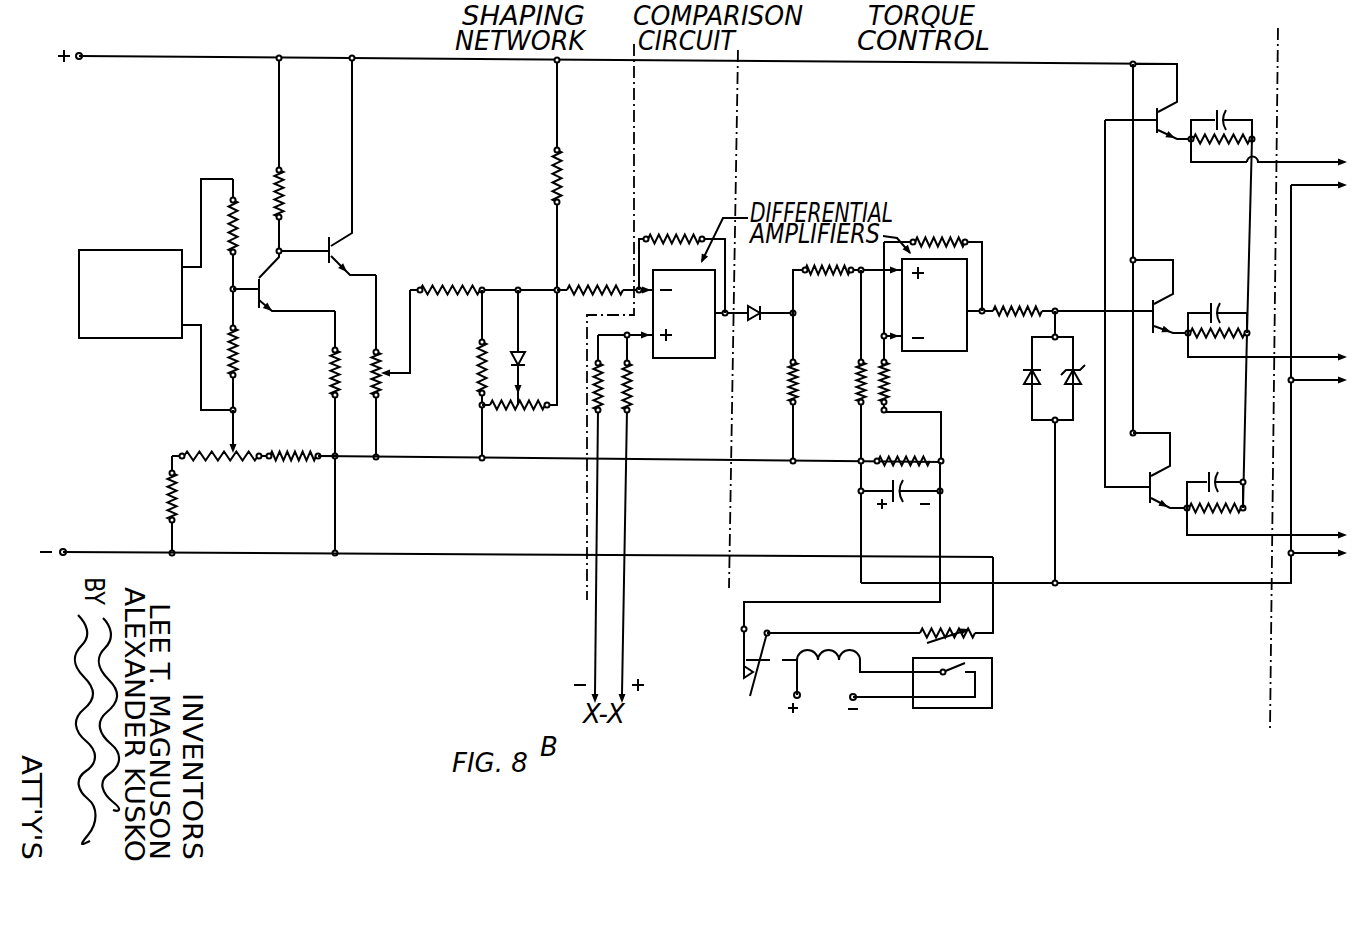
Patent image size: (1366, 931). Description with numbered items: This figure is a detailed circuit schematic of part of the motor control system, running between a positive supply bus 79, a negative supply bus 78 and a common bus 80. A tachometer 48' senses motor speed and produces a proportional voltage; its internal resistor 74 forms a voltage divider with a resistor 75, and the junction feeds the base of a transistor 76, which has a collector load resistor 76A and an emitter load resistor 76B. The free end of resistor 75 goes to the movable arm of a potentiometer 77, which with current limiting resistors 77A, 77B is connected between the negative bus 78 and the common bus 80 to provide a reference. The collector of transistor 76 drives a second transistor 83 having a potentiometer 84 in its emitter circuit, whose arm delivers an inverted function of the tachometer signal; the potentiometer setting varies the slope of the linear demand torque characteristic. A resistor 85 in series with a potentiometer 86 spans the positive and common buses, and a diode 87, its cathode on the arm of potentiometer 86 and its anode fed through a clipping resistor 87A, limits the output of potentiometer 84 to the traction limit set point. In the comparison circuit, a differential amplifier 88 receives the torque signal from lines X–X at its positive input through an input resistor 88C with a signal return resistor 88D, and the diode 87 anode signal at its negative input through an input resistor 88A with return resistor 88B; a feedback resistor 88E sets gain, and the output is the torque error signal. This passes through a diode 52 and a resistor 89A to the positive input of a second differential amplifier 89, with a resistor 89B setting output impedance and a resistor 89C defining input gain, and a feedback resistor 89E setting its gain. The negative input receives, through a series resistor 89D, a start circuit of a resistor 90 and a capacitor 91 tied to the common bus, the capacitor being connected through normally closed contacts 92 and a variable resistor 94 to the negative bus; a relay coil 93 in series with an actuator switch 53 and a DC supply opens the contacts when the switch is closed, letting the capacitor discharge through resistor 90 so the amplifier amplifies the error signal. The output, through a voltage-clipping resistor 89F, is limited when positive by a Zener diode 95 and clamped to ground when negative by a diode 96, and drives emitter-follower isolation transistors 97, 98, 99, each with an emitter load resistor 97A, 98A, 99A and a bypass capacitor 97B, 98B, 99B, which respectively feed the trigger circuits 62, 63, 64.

The tachometer 48' is at (156, 293).
The diode 52 is at (760, 306).
The actuator switch 53 is at (988, 674).
The trigger circuit 62 is at (1296, 518).
The trigger circuit 63 is at (1298, 341).
The trigger circuit 64 is at (1297, 147).
The internal resistor 74 is at (237, 200).
The resistor 75 is at (238, 353).
The transistor 76 is at (284, 282).
The collector load resistor 76A is at (284, 190).
The emitter load resistor 76B is at (326, 375).
The potentiometer 77 is at (244, 446).
The fixed resistor 77A is at (177, 494).
The current limiting resistor 77B is at (297, 463).
The negative supply bus 78 is at (200, 553).
The positive supply bus 79 is at (207, 56).
The common bus 80 is at (429, 463).
The second transistor 83 is at (361, 166).
The potentiometer 84 is at (398, 367).
The resistor 85 is at (562, 166).
The potentiometer 86 is at (519, 370).
The diode 87 is at (512, 351).
The resistor 87A is at (454, 288).
The differential amplifier 88 is at (700, 314).
The input series resistor 88A is at (592, 288).
The signal return resistor 88B is at (476, 382).
The input resistor 88C is at (630, 408).
The signal return resistor 88D is at (601, 389).
The feedback resistor 88E is at (674, 237).
The second differential amplifier 89 is at (947, 305).
The resistor 89A is at (826, 272).
The resistor 89B is at (794, 380).
The resistor 89C is at (859, 395).
The series resistor 89D is at (887, 384).
The feedback resistor 89E is at (960, 241).
The voltage-clipping resistor 89F is at (1020, 310).
The resistor 90 is at (912, 451).
The capacitor 91 is at (902, 494).
The normally closed contacts 92 is at (738, 677).
The relay coil 93 is at (855, 659).
The variable resistor 94 is at (974, 620).
The Zener diode 95 is at (1076, 387).
The diode 96 is at (1027, 387).
The transistor 97 is at (1168, 462).
The emitter load resistor 97A is at (1205, 513).
The bypass capacitor 97B is at (1216, 476).
The transistor 98 is at (1170, 290).
The emitter load resistor 98A is at (1217, 340).
The bypass capacitor 98B is at (1213, 311).
The transistor 99 is at (1178, 104).
The emitter load resistor 99A is at (1215, 142).
The bypass capacitor 99B is at (1226, 114).